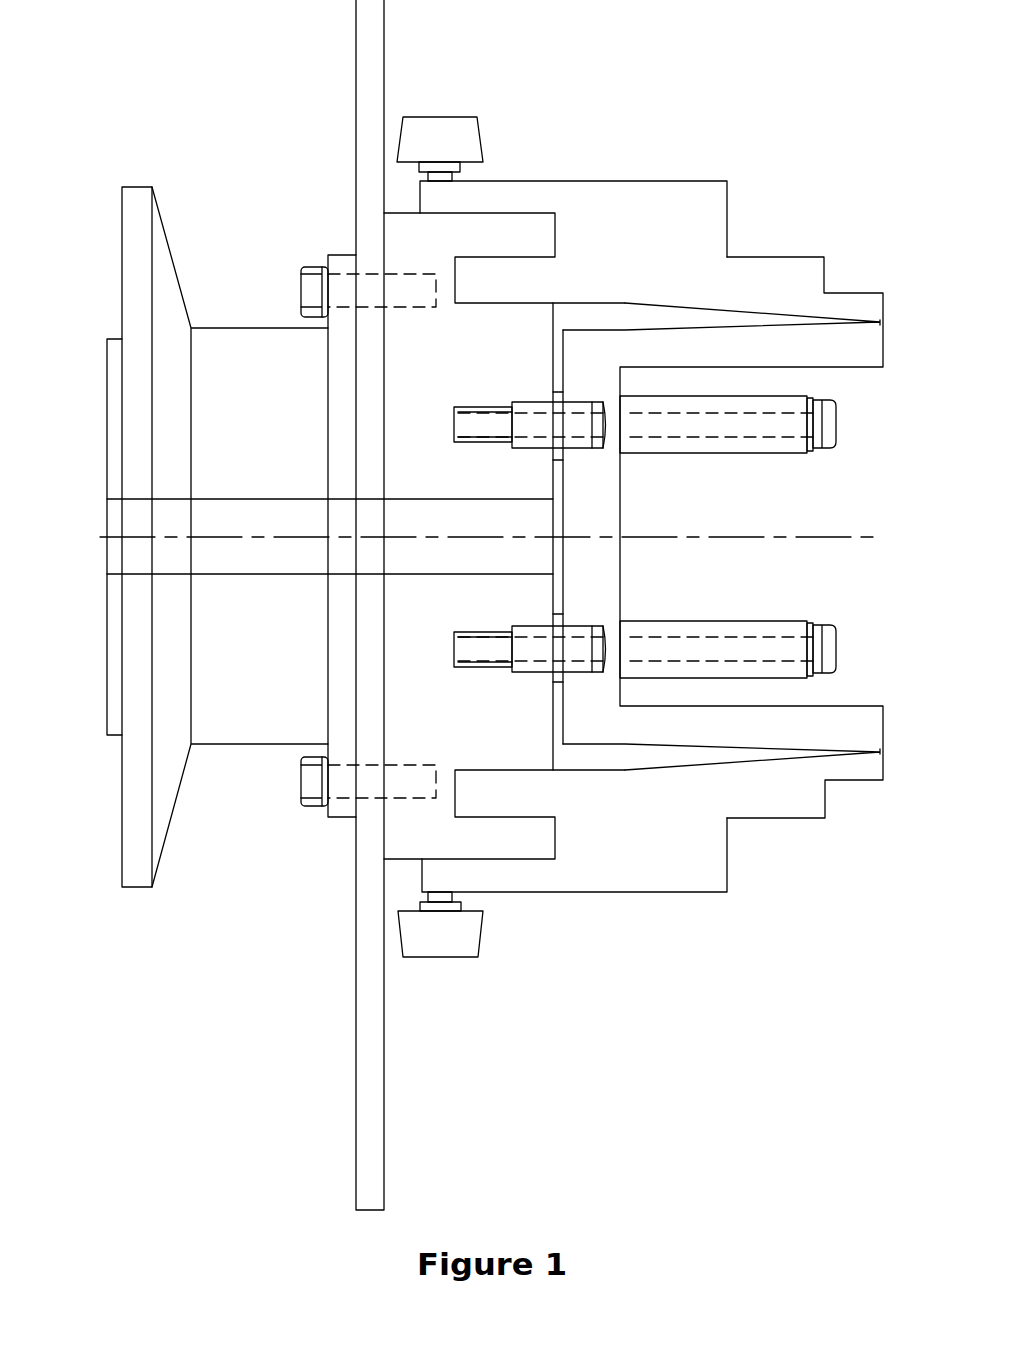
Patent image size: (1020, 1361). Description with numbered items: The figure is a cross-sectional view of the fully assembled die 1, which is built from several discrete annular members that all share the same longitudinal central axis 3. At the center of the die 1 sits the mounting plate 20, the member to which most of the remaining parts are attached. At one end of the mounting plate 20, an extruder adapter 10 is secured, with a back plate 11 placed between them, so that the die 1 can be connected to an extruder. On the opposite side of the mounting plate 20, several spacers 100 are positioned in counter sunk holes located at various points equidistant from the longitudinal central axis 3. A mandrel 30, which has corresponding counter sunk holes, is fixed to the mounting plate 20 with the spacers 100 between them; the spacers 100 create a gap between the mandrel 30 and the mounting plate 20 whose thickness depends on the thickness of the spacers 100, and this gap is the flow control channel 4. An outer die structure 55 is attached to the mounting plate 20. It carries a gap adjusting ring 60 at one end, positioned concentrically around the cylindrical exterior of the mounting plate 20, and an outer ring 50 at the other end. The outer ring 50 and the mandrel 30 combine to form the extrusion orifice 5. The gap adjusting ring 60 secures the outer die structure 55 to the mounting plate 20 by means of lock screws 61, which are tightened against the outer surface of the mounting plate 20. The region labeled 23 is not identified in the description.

The die 1 is at (277, 72).
The longitudinal central axis 3 is at (800, 535).
The flow control channel 4 is at (558, 723).
The extrusion orifice 5 is at (890, 747).
The extruder adapter 10 is at (165, 282).
The back plate 11 is at (368, 1037).
The mounting plate 20 is at (407, 827).
The shaft bore 23 is at (98, 498).
The mandrel 30 is at (808, 728).
The outer ring 50 is at (867, 303).
The outer die structure 55 is at (643, 207).
The gap adjusting ring 60 is at (478, 200).
The lock screws 61 is at (447, 940).
The spacers 100 is at (578, 662).